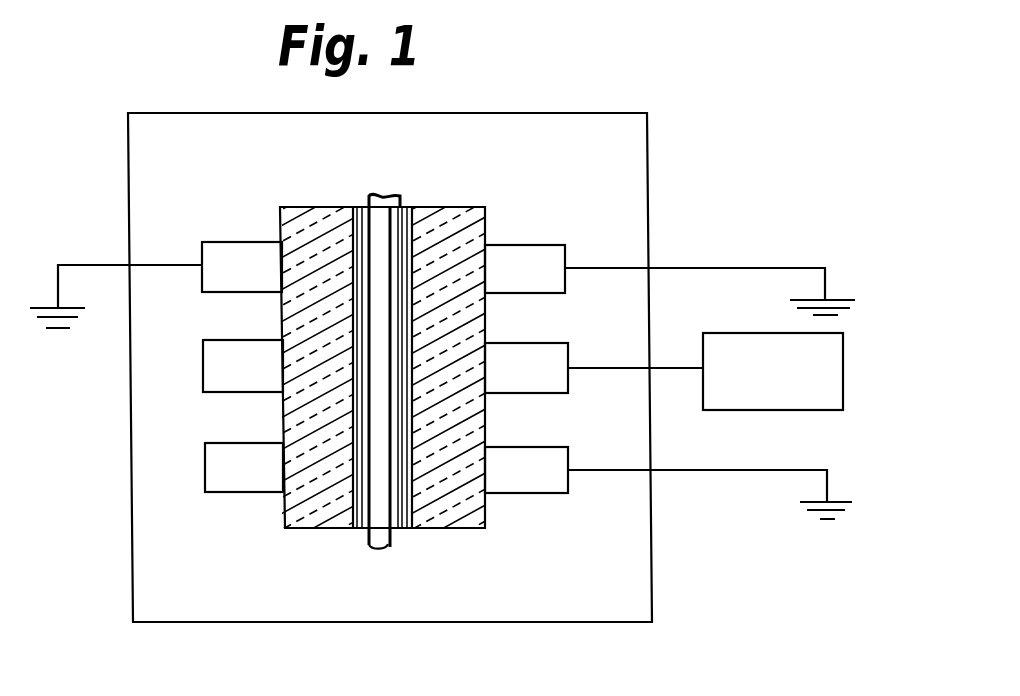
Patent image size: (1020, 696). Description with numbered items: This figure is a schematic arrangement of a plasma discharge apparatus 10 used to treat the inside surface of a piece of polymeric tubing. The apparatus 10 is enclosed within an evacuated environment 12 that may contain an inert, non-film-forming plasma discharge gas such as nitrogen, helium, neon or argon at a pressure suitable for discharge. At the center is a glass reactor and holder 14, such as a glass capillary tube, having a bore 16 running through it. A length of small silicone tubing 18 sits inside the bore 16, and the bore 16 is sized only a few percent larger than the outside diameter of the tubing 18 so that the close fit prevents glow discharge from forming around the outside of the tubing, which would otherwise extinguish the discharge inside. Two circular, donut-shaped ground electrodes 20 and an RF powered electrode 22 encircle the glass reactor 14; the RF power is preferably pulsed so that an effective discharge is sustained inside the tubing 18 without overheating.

The plasma discharge apparatus 10 is at (442, 392).
The evacuated environment 12 is at (652, 617).
The glass reactor and holder 14 is at (283, 518).
The bore 16 is at (357, 545).
The silicone tubing 18 is at (423, 441).
The ground electrodes 20 is at (562, 243).
The RF powered electrode 22 is at (552, 353).